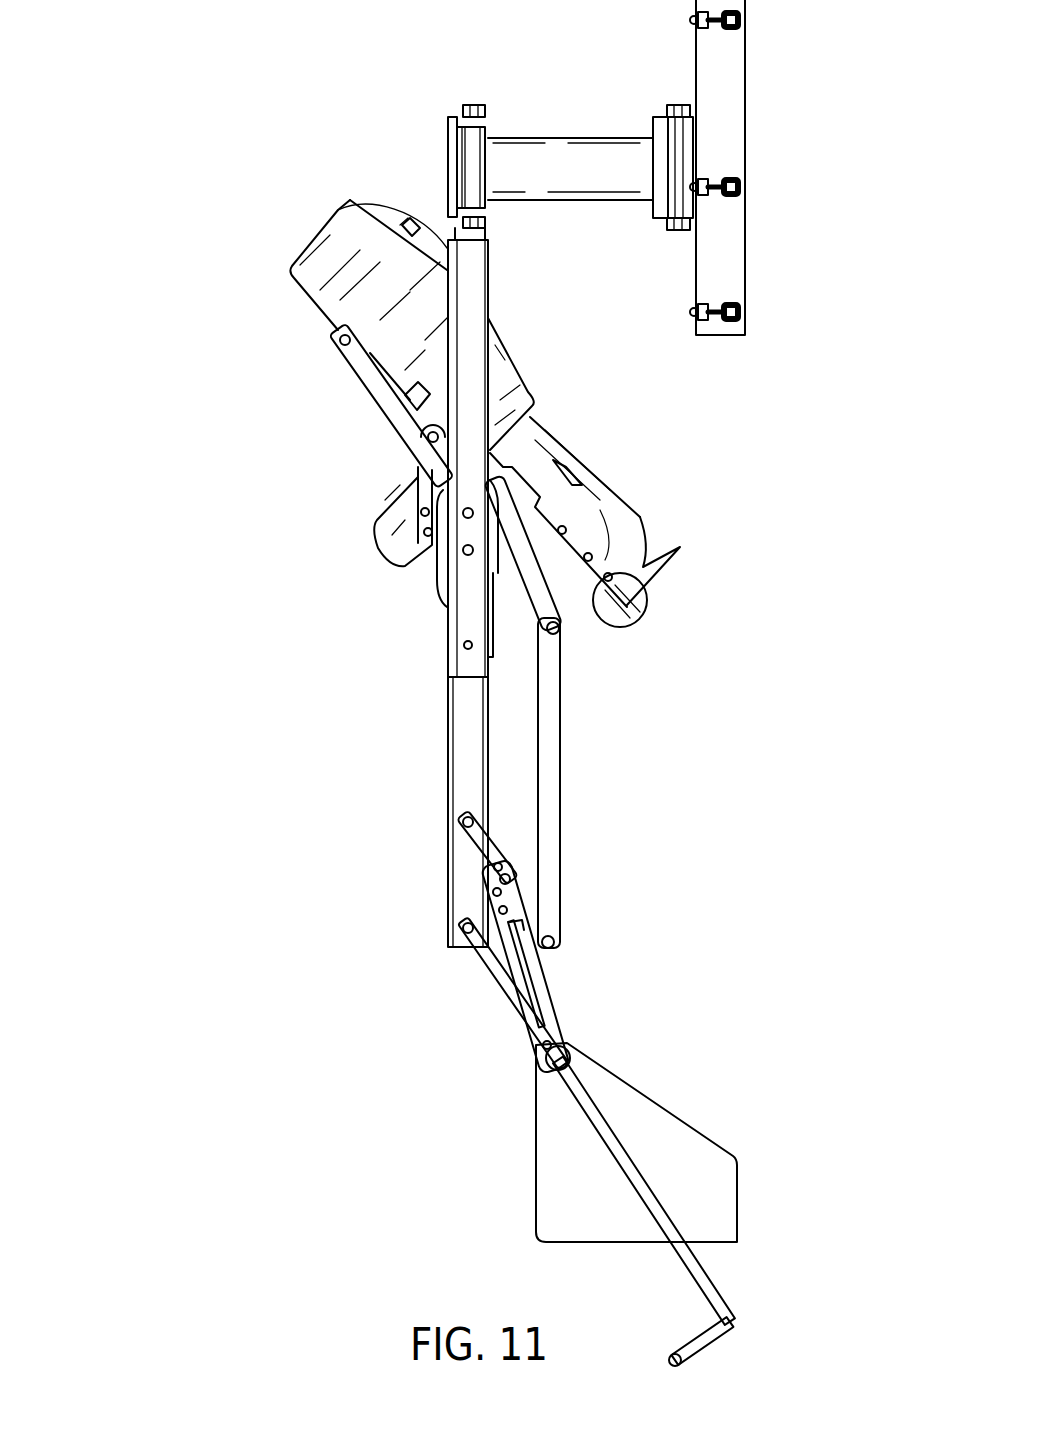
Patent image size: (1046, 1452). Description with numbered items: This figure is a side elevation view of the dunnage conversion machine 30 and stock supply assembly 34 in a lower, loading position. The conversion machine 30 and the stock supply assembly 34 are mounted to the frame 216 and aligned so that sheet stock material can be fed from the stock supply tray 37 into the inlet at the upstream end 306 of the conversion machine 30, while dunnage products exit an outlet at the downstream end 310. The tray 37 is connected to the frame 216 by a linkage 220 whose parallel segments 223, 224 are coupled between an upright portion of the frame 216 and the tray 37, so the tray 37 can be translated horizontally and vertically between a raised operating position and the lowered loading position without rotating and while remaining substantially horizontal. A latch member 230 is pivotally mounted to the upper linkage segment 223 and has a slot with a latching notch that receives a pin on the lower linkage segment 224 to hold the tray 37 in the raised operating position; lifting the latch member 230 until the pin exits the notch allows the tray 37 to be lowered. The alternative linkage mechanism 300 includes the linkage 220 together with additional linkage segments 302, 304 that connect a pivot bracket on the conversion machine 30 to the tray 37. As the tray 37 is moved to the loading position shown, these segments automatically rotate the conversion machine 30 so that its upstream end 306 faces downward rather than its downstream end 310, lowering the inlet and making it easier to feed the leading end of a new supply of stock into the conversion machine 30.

The dunnage conversion machine 30 is at (390, 270).
The stock supply assembly 34 is at (130, 720).
The stock supply tray 37 is at (712, 1200).
The frame 216 is at (465, 597).
The linkage 220 is at (393, 942).
The upper linkage segment 223 is at (482, 842).
The lower linkage segment 224 is at (482, 967).
The latch member 230 is at (538, 970).
The linkage mechanism 300 is at (661, 711).
The linkage segment 302 is at (398, 413).
The linkage segment 304 is at (545, 843).
The upstream end 306 is at (720, 545).
The downstream end 310 is at (270, 222).